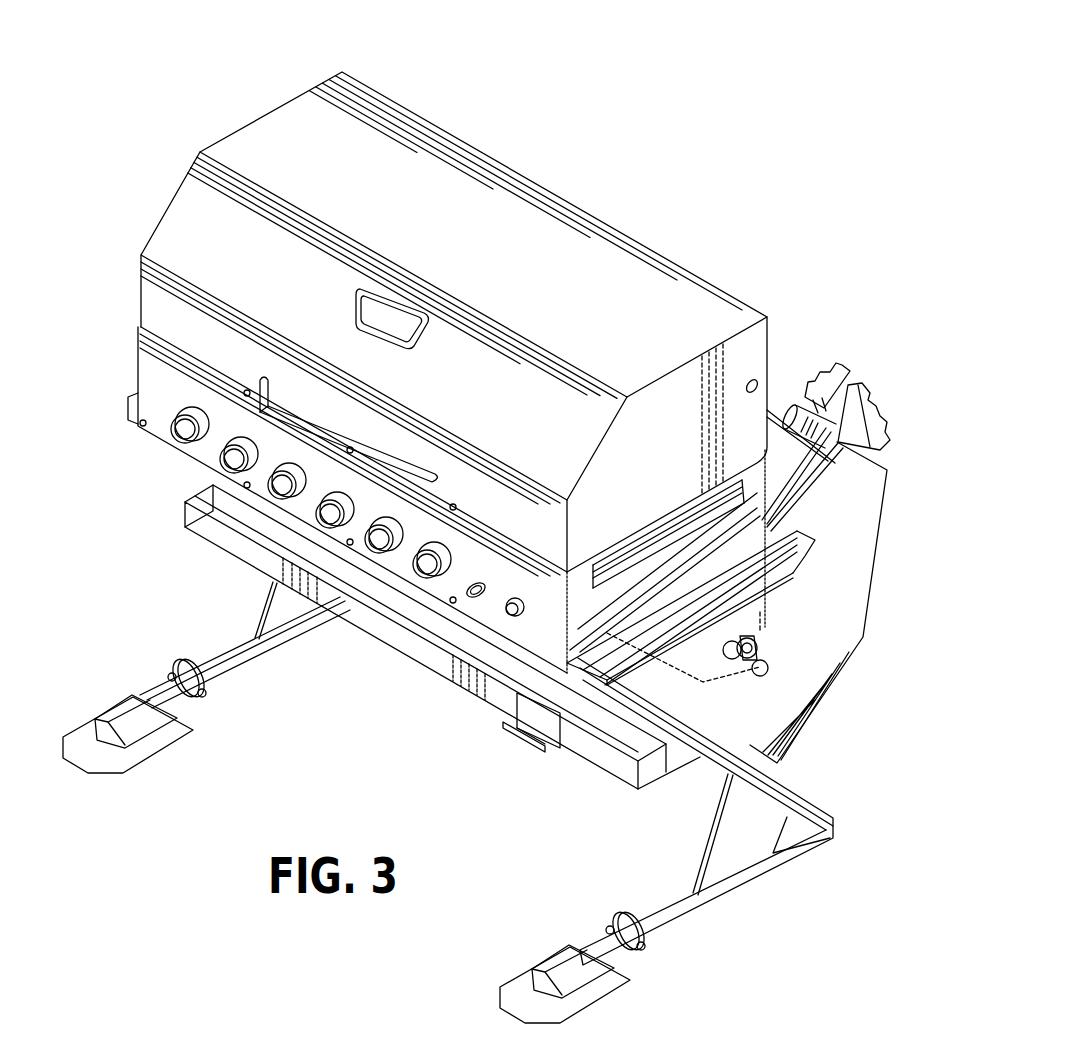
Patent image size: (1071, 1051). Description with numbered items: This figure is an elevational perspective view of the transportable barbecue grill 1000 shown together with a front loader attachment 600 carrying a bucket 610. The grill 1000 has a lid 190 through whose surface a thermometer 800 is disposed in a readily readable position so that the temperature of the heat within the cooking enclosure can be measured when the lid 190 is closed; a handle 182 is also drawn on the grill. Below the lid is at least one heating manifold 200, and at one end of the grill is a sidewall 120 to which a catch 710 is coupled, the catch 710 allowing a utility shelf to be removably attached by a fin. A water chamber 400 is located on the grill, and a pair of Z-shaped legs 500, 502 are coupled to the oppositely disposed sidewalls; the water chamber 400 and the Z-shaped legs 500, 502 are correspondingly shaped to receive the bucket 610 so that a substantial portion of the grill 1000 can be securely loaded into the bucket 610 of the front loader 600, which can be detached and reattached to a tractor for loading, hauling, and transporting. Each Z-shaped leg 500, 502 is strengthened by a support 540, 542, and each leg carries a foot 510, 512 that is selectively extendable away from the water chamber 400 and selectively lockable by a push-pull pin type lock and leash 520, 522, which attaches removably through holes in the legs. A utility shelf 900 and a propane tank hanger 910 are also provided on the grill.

The transportable barbecue grill 1000 is at (247, 91).
The lid 190 is at (498, 250).
The thermometer 800 is at (357, 302).
The handle 182 is at (330, 428).
The heating manifold 200 is at (187, 457).
The catch 710 is at (663, 521).
The sidewall 120 is at (645, 577).
The front loader attachment 600 is at (884, 442).
The bucket 610 is at (843, 688).
The water chamber 400 is at (767, 614).
The propane tank hanger 910 is at (412, 673).
The utility shelf 900 is at (523, 748).
The Z-shaped leg 500 is at (810, 803).
The support 540 is at (718, 828).
The push-pull pin type lock and leash 520 is at (620, 915).
The foot 510 is at (536, 967).
The Z-shaped leg 502 is at (233, 684).
The support 542 is at (268, 603).
The push-pull pin type lock and leash 522 is at (177, 663).
The foot 512 is at (113, 707).